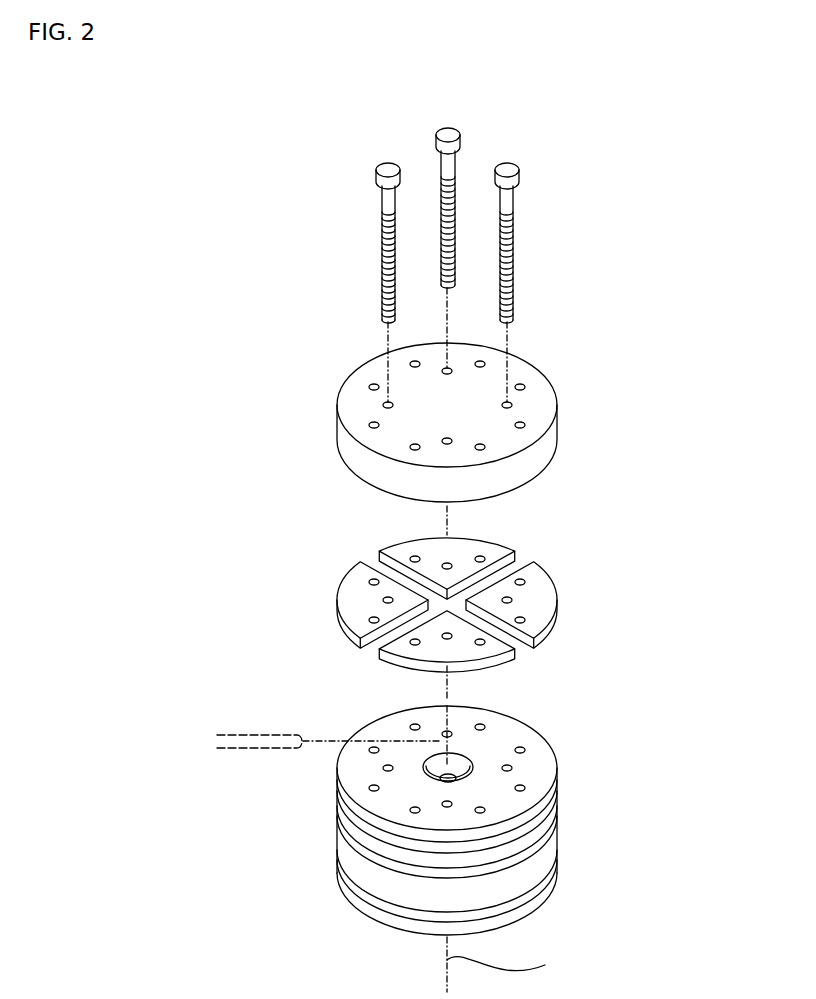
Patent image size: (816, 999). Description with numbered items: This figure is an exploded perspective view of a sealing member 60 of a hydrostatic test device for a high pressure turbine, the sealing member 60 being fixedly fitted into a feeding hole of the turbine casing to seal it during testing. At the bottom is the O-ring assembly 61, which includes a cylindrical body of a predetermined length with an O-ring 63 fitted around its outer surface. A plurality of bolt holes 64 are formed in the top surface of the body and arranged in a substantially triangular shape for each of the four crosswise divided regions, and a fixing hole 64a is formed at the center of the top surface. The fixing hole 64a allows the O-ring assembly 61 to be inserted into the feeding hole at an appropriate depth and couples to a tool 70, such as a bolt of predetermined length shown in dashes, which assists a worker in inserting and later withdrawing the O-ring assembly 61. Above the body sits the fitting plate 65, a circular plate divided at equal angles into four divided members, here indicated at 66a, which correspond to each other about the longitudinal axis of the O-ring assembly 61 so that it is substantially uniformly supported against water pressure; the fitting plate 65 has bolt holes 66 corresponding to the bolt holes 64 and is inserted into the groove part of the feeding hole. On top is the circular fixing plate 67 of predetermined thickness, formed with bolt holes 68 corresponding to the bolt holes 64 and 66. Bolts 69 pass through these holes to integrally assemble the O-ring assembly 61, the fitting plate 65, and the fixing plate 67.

The sealing member 60 is at (630, 219).
The O-ring assembly 61 is at (557, 885).
The O-ring 63 is at (558, 847).
The bolt holes 64 is at (525, 751).
The fixing hole 64a is at (453, 753).
The fitting plate 65 is at (558, 590).
The bolt holes 66 is at (483, 554).
The slot between quadrant segments 66a is at (548, 606).
The fixing plate 67 is at (340, 444).
The bolt holes 68 is at (374, 384).
The bolts 69 is at (383, 199).
The tool 70 is at (260, 733).